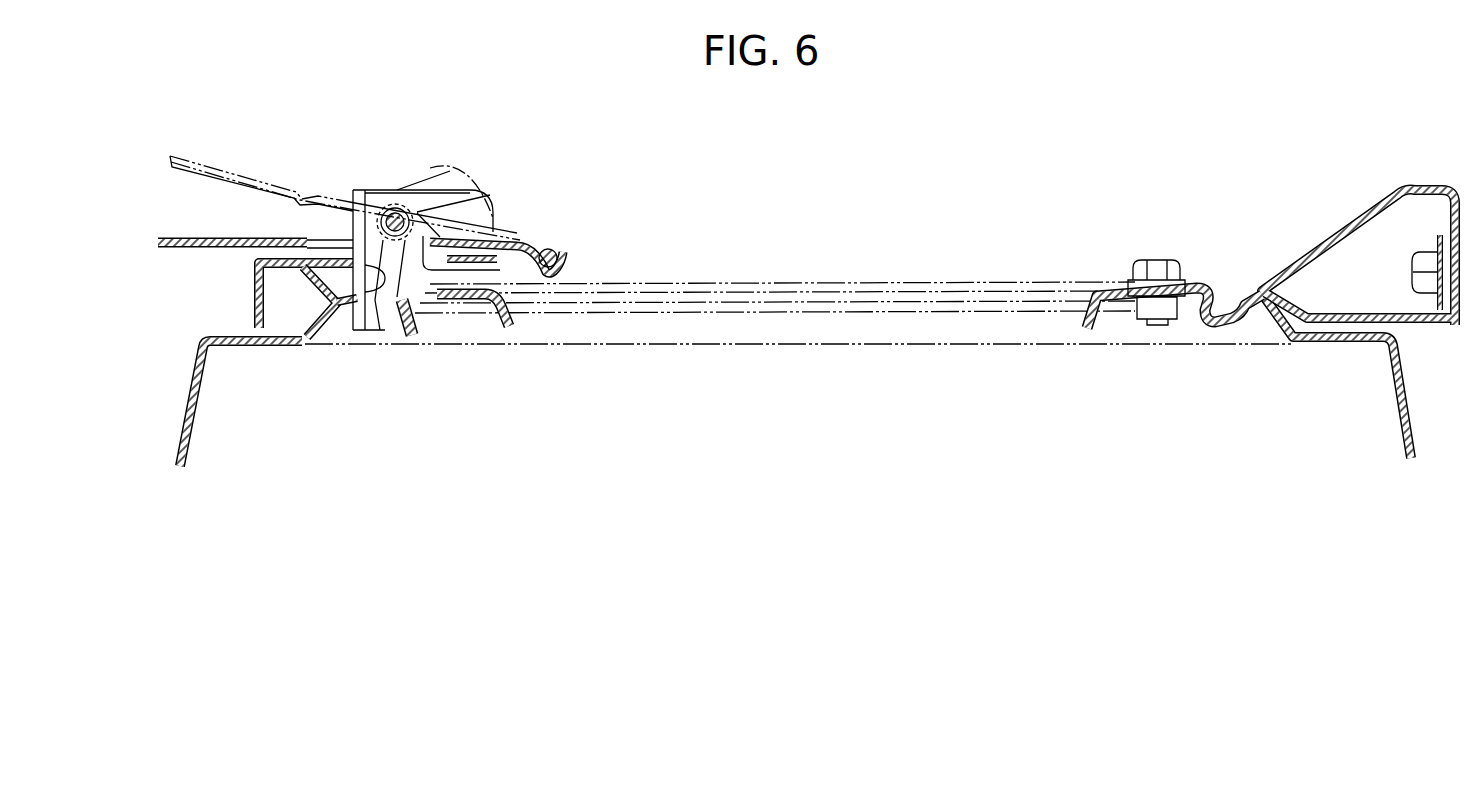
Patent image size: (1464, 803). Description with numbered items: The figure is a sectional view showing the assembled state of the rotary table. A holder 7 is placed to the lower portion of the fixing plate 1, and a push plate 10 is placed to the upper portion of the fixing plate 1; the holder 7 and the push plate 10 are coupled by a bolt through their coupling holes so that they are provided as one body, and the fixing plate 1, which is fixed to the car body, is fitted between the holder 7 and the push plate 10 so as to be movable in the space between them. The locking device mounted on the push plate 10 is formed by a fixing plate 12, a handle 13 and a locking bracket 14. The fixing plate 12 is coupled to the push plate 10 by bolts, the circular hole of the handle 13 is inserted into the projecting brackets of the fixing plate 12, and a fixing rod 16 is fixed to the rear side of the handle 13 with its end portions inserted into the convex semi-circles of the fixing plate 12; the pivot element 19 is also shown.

The fixing plate 1 is at (207, 386).
The holder 7 is at (508, 333).
The push plate 10 is at (253, 303).
The fixing plate 12 is at (512, 230).
The handle 13 is at (188, 237).
The locking bracket 14 is at (447, 200).
The fixing rod 16 is at (545, 248).
The pivot pin 19 is at (407, 200).